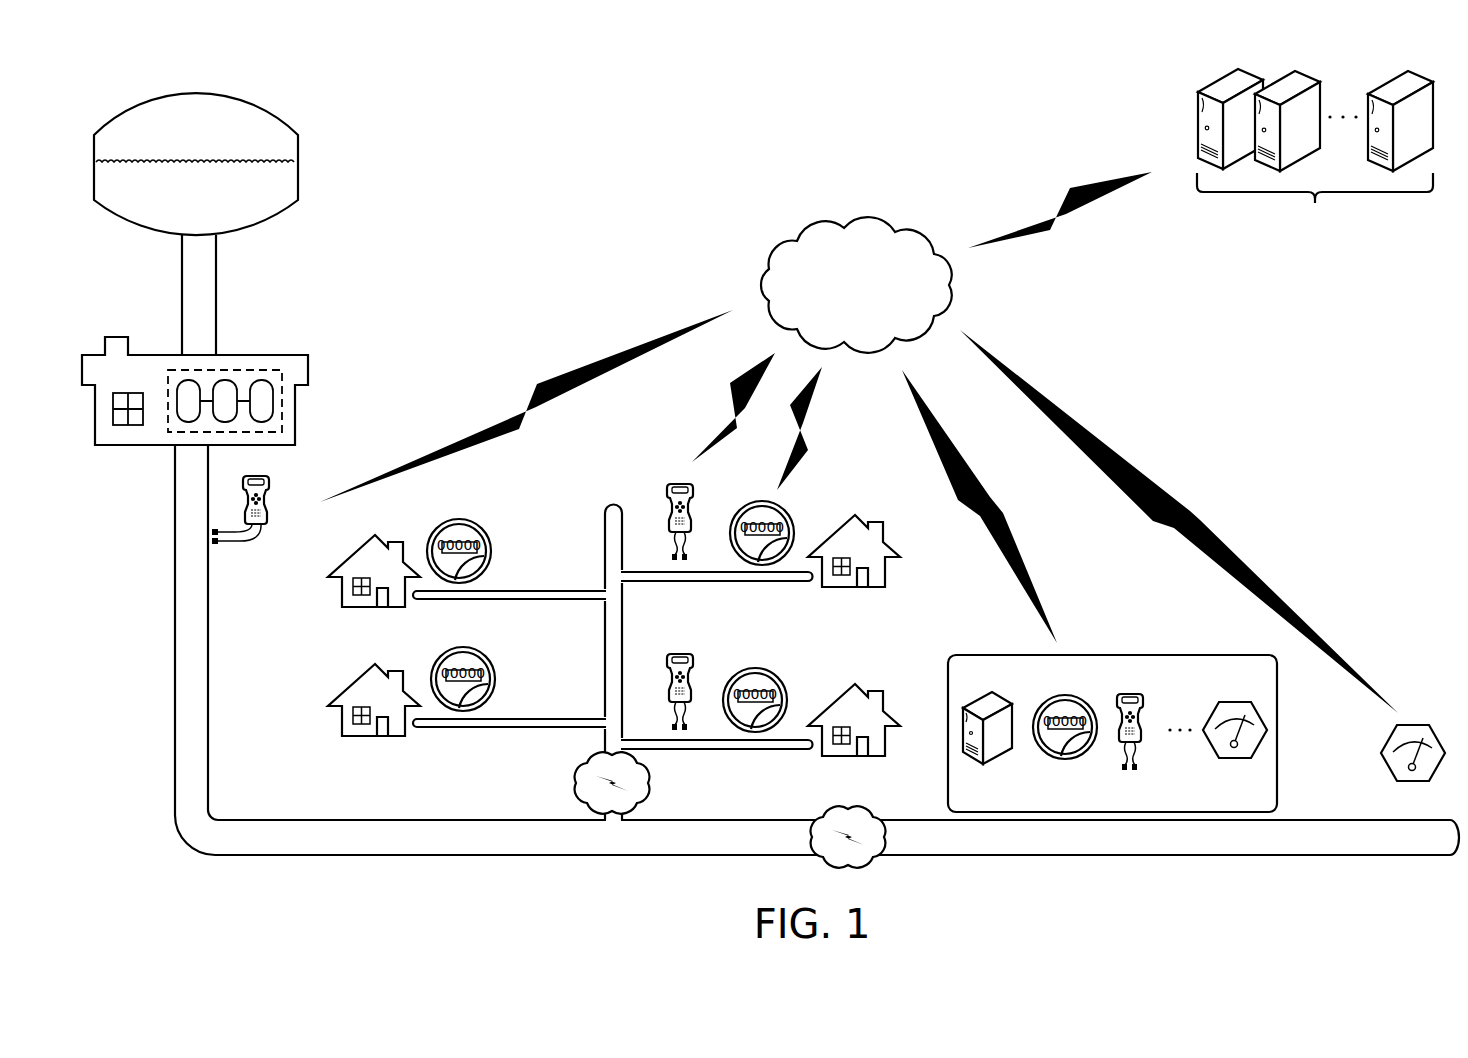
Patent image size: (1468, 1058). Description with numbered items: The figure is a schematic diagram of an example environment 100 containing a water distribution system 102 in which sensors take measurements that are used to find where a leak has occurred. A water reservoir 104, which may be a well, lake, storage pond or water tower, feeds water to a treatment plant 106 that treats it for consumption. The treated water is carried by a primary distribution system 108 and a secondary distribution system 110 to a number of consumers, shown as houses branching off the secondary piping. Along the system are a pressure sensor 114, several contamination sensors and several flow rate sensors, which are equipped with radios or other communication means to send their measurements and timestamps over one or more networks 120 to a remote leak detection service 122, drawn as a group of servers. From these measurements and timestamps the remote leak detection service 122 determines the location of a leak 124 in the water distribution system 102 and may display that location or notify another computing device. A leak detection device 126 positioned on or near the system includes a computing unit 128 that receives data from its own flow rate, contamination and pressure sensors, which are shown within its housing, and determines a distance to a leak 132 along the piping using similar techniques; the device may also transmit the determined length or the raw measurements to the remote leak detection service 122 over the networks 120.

The environment 100 is at (422, 106).
The water distribution system 102 is at (413, 892).
The water reservoir 104 is at (196, 224).
The treatment plant 106 is at (308, 355).
The primary distribution system 108 is at (198, 852).
The secondary distribution system 110 is at (605, 515).
The pressure sensor 114 is at (1413, 769).
The network 120 is at (856, 285).
The remote leak detection service 122 is at (1315, 163).
The leak 124 is at (576, 775).
The leak detection device 126 is at (1112, 733).
The computing unit 128 is at (987, 748).
The leak 132 is at (874, 864).